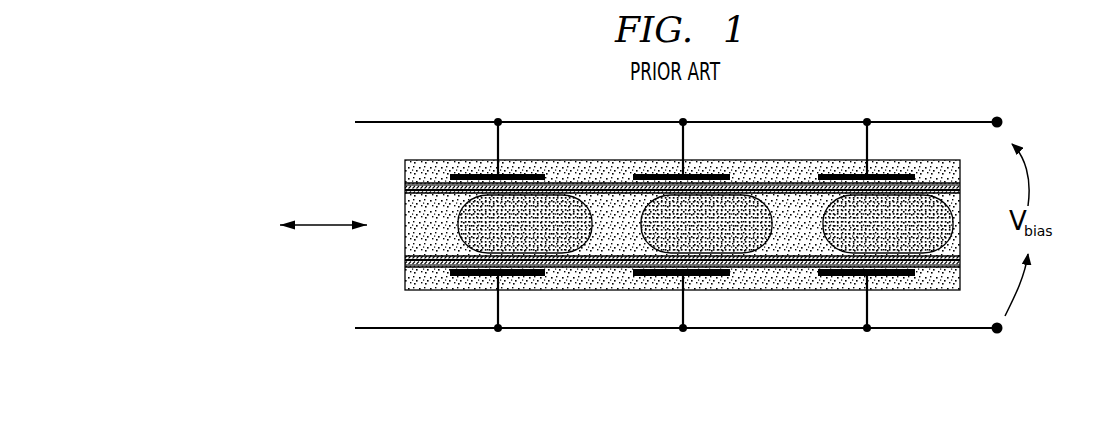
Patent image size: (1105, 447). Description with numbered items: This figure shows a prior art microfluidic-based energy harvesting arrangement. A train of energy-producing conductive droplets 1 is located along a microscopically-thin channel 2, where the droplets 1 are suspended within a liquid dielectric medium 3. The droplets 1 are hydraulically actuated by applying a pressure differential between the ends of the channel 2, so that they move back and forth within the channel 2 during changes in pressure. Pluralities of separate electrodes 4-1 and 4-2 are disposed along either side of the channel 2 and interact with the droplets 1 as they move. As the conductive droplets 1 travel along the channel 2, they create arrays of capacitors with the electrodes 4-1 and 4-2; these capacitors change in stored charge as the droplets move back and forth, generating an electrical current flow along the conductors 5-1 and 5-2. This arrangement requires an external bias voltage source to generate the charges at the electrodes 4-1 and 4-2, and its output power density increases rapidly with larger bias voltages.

The conductive droplets 1 is at (737, 245).
The channel 2 is at (428, 284).
The liquid dielectric medium 3 is at (408, 212).
The electrodes 4-1 is at (524, 175).
The electrodes 4-2 is at (513, 274).
The conductor 5-1 is at (748, 122).
The conductor 5-2 is at (822, 329).